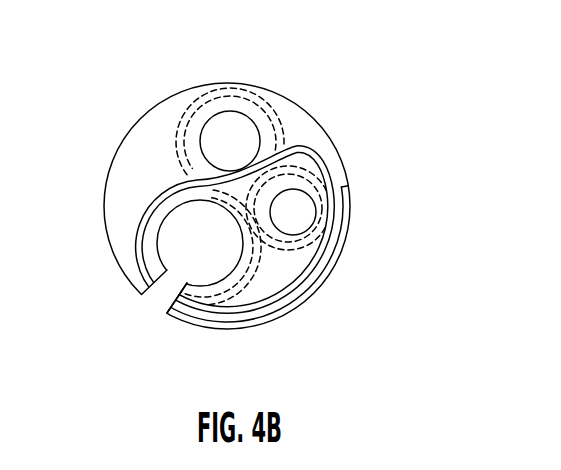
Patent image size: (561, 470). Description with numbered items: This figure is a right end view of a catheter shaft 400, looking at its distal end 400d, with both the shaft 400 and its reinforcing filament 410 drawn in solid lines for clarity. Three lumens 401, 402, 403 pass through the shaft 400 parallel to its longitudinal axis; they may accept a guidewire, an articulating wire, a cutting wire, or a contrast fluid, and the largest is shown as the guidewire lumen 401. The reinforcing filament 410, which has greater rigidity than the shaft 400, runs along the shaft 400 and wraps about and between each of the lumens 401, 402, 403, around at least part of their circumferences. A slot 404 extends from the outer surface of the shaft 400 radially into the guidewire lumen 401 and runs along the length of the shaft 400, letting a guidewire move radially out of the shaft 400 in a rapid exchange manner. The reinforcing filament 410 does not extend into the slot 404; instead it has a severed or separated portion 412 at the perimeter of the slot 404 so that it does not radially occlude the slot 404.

The shaft 400 is at (165, 98).
The distal end 400d is at (263, 98).
The guidewire lumen 401 is at (187, 243).
The lumen 402 is at (237, 140).
The lumen 403 is at (311, 191).
The slot 404 is at (158, 295).
The reinforcing filament 410 is at (347, 188).
The severed or separated portion 412 is at (168, 308).